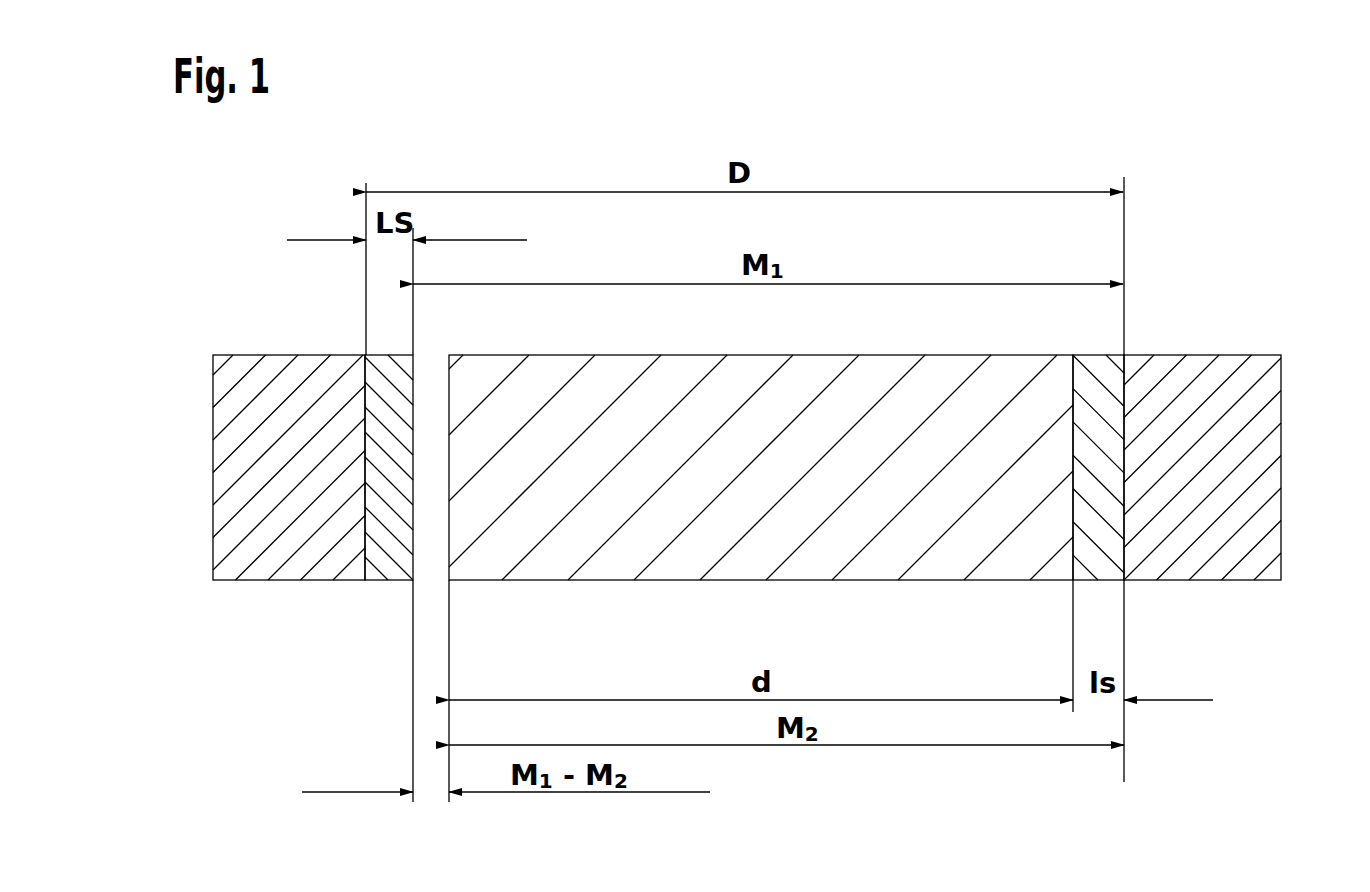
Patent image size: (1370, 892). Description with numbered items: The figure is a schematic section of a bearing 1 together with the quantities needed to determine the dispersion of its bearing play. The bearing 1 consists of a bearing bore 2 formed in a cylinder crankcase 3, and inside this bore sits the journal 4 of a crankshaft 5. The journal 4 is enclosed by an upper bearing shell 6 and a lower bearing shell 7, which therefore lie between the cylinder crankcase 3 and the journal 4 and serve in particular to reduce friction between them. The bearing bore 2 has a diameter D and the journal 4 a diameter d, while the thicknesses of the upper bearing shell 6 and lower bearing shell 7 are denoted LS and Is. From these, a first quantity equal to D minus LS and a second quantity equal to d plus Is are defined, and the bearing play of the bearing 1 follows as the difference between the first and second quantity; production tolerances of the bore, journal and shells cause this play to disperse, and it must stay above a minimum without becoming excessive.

The bearing 1 is at (1228, 246).
The bearing bore 2 is at (436, 609).
The cylinder crankcase 3 is at (262, 570).
The journal 4 is at (761, 513).
The crankshaft 5 is at (627, 568).
The upper bearing shell 6 is at (385, 373).
The lower bearing shell 7 is at (1100, 563).